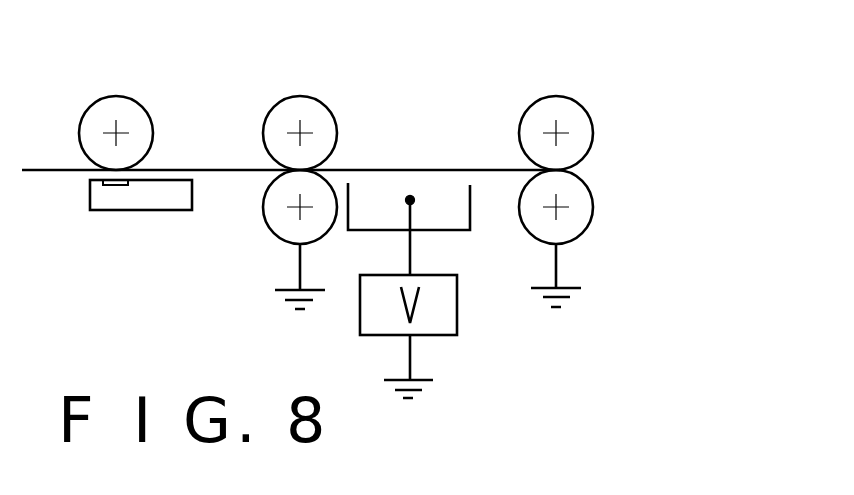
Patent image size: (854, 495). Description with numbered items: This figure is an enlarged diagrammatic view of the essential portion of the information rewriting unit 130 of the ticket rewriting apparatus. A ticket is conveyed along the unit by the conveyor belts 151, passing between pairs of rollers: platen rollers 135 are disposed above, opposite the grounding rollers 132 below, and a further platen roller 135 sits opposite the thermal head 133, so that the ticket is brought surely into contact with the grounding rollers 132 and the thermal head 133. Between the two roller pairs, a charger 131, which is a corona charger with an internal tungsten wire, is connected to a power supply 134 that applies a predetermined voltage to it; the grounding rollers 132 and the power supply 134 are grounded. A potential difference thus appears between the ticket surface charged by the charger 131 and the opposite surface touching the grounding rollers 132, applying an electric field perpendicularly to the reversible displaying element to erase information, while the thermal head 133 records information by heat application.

The information rewriting unit 130 is at (438, 80).
The charger 131 is at (443, 232).
The grounding rollers 132 is at (265, 218).
The thermal head 133 is at (110, 212).
The power supply 134 is at (458, 305).
The platen rollers 135 is at (132, 112).
The conveyor belts 151 is at (438, 167).